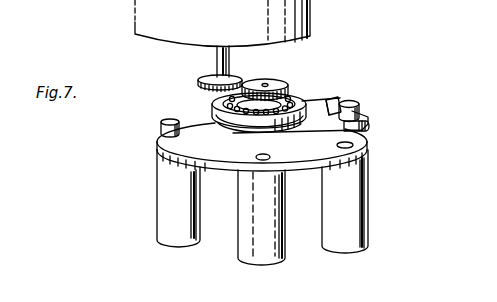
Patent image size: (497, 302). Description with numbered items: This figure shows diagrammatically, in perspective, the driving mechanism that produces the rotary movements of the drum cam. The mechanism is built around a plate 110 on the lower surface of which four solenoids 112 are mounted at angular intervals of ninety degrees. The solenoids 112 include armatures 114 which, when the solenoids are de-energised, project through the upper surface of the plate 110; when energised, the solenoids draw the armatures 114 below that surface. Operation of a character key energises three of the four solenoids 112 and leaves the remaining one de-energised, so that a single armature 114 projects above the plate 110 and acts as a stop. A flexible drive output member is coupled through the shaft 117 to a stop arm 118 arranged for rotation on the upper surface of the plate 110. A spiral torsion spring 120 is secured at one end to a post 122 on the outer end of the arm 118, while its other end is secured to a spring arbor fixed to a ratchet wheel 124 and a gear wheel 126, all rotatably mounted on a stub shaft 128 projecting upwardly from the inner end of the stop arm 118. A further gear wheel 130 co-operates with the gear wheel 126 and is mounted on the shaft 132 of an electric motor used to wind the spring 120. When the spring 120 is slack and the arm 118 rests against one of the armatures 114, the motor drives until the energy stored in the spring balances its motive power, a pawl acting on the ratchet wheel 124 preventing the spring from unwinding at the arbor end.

The plate 110 is at (232, 158).
The solenoids 112 is at (250, 191).
The armatures 114 is at (160, 130).
The shaft 117 is at (252, 211).
The stop arm 118 is at (370, 126).
The spiral torsion spring 120 is at (321, 98).
The post 122 is at (357, 101).
The ratchet wheel 124 is at (226, 104).
The gear wheel 126 is at (247, 94).
The stub shaft 128 is at (265, 82).
The gear wheel 130 is at (199, 81).
The shaft 132 is at (217, 63).